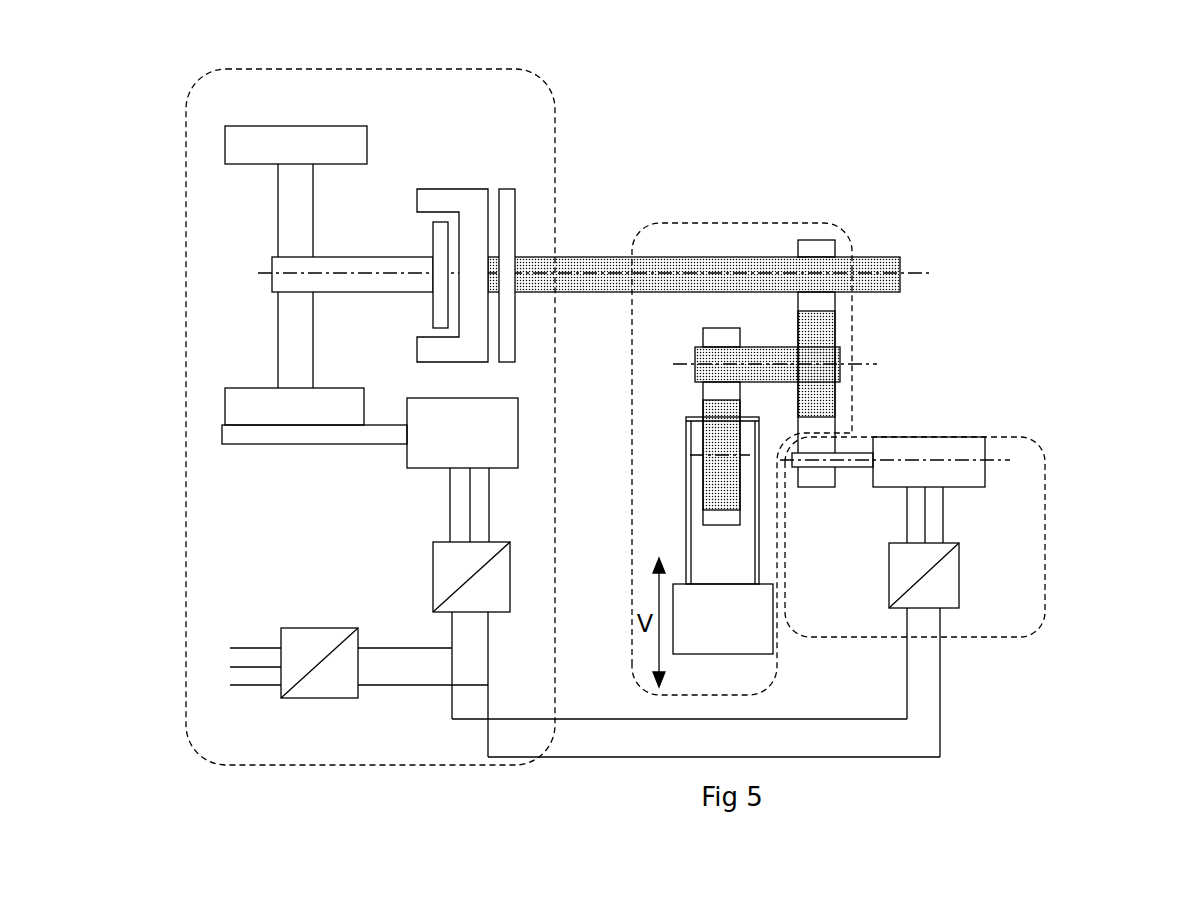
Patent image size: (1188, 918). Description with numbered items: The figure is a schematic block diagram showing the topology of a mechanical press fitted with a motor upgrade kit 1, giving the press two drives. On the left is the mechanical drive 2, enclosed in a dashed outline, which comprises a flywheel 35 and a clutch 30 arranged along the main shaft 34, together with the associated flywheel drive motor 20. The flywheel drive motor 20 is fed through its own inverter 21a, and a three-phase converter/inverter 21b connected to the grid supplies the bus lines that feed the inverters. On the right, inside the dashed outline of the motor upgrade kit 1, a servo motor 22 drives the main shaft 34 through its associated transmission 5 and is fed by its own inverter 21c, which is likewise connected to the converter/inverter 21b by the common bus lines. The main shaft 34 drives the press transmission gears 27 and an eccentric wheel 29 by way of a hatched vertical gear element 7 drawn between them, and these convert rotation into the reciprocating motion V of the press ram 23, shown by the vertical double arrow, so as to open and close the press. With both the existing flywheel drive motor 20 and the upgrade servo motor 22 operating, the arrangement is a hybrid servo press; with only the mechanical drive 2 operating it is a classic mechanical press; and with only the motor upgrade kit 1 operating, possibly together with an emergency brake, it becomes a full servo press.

The motor upgrade kit 1 is at (915, 537).
The mechanical drive 2 is at (370, 402).
The transmission 5 is at (838, 437).
The gear wheel 7 is at (820, 325).
The flywheel drive motor 20 is at (418, 452).
The inverter 21a is at (422, 573).
The converter/inverter 21b is at (268, 637).
The inverter 21c is at (960, 580).
The servo motor 22 is at (980, 448).
The press ram 23 is at (757, 640).
The press transmission gears 27 is at (813, 247).
The eccentric wheel 29 is at (733, 410).
The clutch 30 is at (448, 200).
The main shaft 34 is at (872, 255).
The flywheel 35 is at (230, 137).